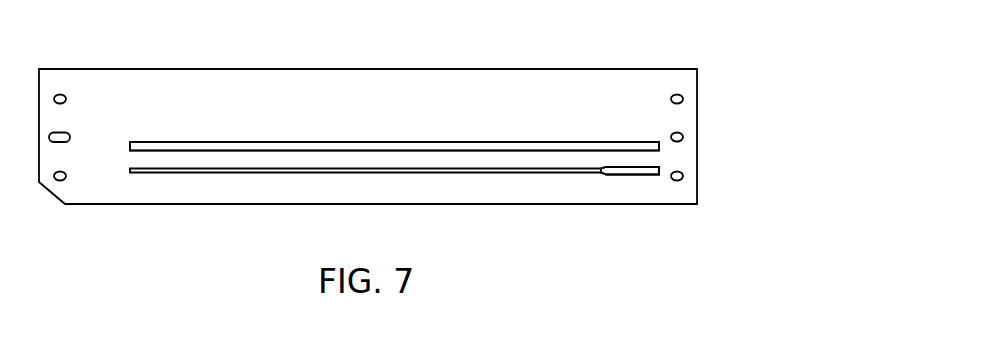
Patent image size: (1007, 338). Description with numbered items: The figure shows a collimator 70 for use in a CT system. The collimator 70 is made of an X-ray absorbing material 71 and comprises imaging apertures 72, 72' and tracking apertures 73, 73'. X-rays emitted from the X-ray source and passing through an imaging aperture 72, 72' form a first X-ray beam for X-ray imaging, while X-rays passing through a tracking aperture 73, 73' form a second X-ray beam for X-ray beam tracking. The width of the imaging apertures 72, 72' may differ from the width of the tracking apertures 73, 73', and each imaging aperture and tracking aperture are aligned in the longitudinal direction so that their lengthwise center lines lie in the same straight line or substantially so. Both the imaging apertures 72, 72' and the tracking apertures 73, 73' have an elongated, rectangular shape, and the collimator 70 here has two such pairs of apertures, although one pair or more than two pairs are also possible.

The collimator 70 is at (547, 37).
The X-ray absorbing material 71 is at (175, 95).
The imaging aperture 72 is at (394, 204).
The imaging aperture 72' is at (394, 117).
The tracking aperture 73 is at (630, 203).
The tracking aperture 73' is at (394, 117).